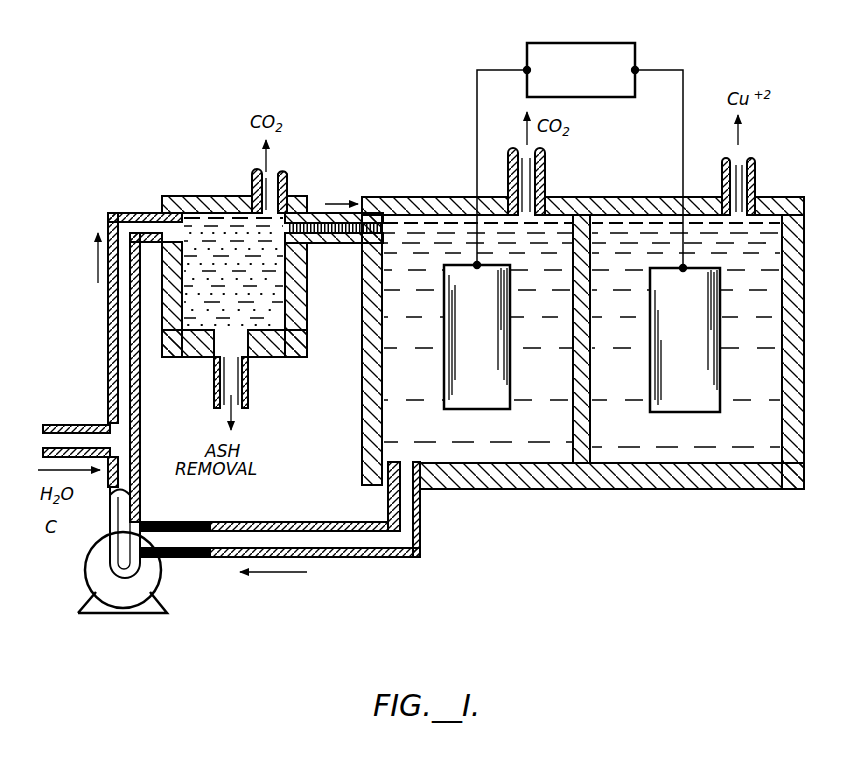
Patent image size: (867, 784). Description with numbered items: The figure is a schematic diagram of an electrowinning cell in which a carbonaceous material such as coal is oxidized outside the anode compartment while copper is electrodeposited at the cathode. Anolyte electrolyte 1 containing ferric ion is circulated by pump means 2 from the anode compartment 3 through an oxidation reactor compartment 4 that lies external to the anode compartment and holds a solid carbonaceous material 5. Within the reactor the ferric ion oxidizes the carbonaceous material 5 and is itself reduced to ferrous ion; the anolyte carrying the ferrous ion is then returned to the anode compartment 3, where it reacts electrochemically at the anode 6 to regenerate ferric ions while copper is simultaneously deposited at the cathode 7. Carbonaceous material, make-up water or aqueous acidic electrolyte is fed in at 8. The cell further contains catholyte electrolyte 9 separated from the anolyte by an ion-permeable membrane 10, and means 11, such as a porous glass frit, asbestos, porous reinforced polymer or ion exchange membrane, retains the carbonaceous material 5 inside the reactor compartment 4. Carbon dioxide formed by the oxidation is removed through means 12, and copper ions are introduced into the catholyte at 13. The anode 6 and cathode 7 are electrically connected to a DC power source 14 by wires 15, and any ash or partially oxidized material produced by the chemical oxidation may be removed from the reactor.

The anolyte electrolyte 1 is at (522, 432).
The pump means 2 is at (150, 568).
The anode compartment 3 is at (460, 489).
The oxidation reactor compartment 4 is at (188, 196).
The solid carbonaceous material 5 is at (198, 245).
The anode 6 is at (483, 309).
The cathode 7 is at (693, 314).
The feed inlet 8 is at (100, 425).
The catholyte electrolyte 9 is at (740, 433).
The ion-permeable membrane 10 is at (590, 425).
The means for containing the carbonaceous material 11 is at (315, 213).
The means for removing CO2 12 is at (272, 190).
The means for introducing Cu2+ ions 13 is at (756, 179).
The DC power source 14 is at (585, 43).
The wires 15 is at (477, 93).